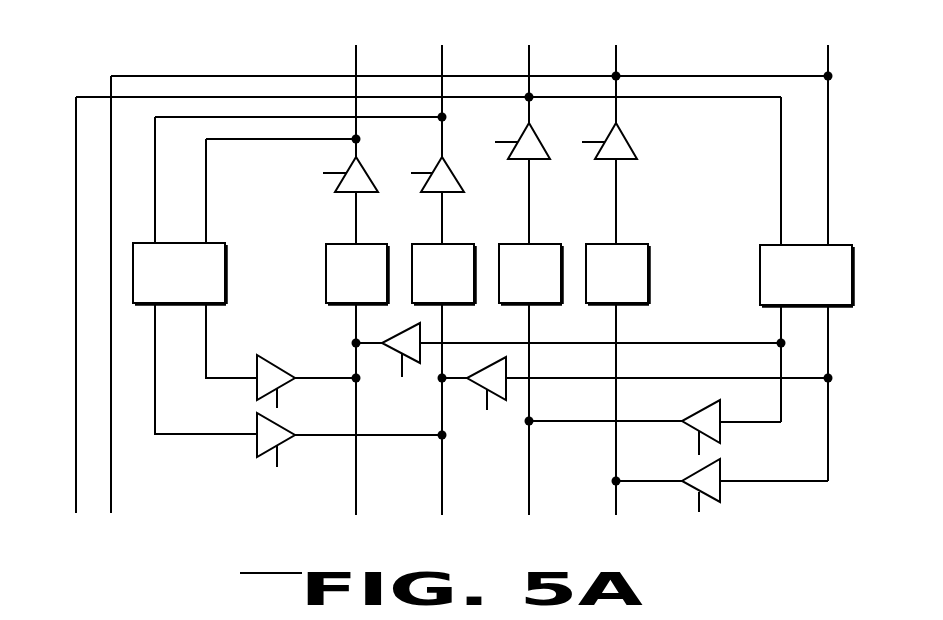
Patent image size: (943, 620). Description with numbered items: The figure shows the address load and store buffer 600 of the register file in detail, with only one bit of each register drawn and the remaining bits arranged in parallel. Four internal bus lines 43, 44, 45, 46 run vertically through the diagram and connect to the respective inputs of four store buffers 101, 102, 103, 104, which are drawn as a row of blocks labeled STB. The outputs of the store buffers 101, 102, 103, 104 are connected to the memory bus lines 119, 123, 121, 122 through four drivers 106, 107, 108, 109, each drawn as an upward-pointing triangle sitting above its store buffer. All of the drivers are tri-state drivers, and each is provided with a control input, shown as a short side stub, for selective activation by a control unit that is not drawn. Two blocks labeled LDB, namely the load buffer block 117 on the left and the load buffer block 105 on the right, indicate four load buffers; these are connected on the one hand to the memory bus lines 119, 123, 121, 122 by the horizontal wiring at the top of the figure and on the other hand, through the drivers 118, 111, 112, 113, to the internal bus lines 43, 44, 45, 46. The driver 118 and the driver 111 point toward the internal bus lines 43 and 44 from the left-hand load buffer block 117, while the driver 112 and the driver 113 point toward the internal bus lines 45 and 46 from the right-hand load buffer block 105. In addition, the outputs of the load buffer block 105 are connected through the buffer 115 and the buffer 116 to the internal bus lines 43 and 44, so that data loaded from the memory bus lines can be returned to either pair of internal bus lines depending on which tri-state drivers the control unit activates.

The address load and store buffer 600 is at (96, 28).
The memory bus line 119 is at (355, 60).
The memory bus line 123 is at (441, 60).
The memory bus line 121 is at (528, 60).
The memory bus line 122 is at (615, 60).
The store buffer 101 is at (371, 244).
The store buffer 102 is at (462, 244).
The store buffer 103 is at (549, 244).
The store buffer 104 is at (636, 244).
The load buffer block 105 is at (853, 262).
The load buffer block 117 is at (226, 262).
The driver 106 is at (369, 178).
The driver 107 is at (455, 176).
The driver 108 is at (522, 133).
The driver 109 is at (626, 141).
The driver 111 is at (284, 420).
The driver 112 is at (698, 408).
The driver 113 is at (698, 469).
The buffer 115 is at (393, 352).
The buffer 116 is at (478, 388).
The driver 118 is at (272, 356).
The internal bus line 43 is at (356, 505).
The internal bus line 44 is at (442, 505).
The internal bus line 45 is at (529, 505).
The internal bus line 46 is at (616, 505).